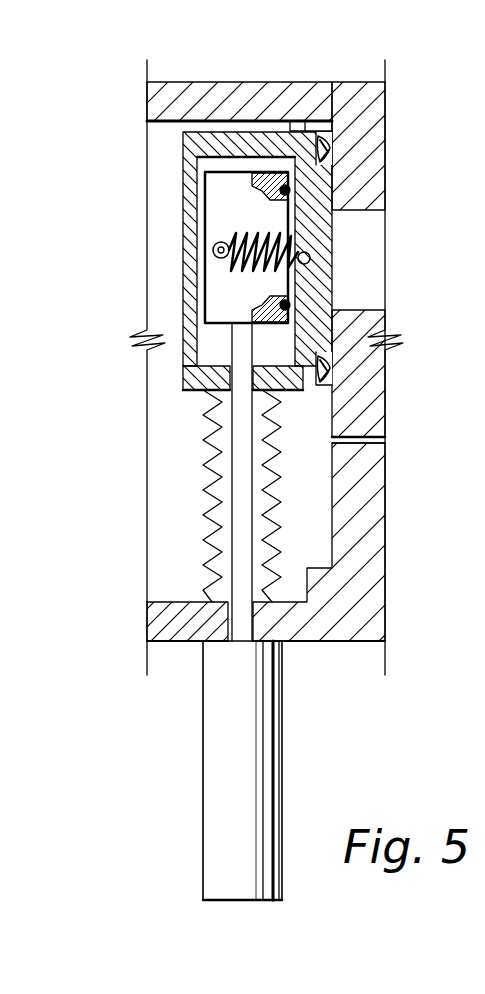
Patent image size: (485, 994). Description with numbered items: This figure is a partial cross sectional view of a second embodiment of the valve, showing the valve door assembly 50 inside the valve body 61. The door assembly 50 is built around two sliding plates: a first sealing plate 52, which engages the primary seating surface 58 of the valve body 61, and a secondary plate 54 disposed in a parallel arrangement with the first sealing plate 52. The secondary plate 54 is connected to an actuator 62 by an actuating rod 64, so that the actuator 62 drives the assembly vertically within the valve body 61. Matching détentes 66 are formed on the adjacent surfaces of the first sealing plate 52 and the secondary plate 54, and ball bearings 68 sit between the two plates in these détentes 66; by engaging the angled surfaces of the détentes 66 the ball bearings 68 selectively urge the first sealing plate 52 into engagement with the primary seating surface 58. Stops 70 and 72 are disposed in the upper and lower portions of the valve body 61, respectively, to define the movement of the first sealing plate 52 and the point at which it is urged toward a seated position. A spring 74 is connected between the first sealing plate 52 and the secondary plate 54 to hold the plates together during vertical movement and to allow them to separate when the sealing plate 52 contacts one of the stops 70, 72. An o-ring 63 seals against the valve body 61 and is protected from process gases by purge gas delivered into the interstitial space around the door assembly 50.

The valve door assembly 50 is at (182, 311).
The first sealing plate 52 is at (262, 132).
The secondary plate 54 is at (212, 173).
The primary seating surface 58 is at (334, 122).
The valve body 61 is at (207, 82).
The actuator 62 is at (203, 773).
The o-ring 63 is at (328, 151).
The actuating rod 64 is at (243, 580).
The détentes 66 is at (265, 197).
The ball bearings 68 is at (274, 189).
The stop 70 is at (310, 121).
The stop 72 is at (318, 600).
The spring 74 is at (232, 238).